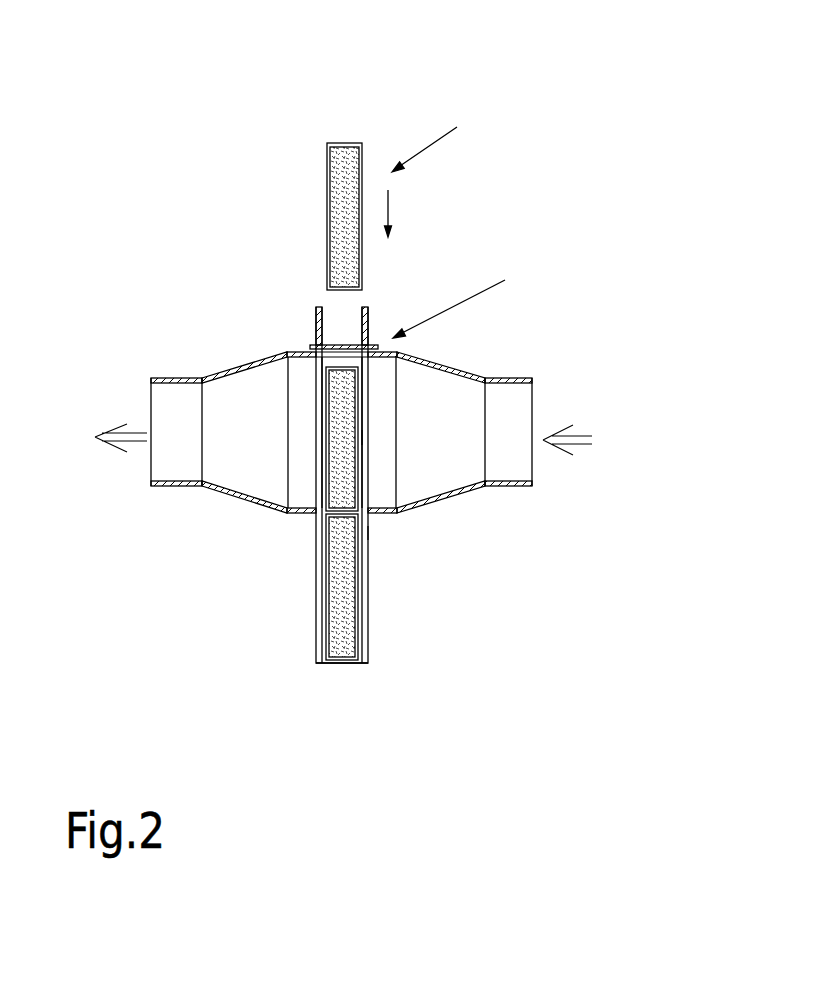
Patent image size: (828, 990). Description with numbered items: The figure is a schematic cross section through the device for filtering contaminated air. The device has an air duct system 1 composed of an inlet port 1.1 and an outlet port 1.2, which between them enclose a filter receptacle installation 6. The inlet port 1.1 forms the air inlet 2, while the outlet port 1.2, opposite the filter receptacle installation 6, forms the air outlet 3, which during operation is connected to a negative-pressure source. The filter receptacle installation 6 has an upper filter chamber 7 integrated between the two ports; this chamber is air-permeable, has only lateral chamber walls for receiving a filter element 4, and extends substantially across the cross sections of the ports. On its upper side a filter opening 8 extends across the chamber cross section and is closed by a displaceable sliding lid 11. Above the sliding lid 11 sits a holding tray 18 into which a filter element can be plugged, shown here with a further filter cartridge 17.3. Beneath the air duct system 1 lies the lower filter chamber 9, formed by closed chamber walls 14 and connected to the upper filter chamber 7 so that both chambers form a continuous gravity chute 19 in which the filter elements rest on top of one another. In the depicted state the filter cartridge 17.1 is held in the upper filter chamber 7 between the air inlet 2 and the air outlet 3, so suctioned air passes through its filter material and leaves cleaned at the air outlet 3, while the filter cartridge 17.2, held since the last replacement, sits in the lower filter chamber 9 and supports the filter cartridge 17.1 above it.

The air duct system 1 is at (318, 491).
The inlet port 1.1 is at (417, 463).
The outlet port 1.2 is at (267, 492).
The air inlet 2 is at (533, 400).
The air outlet 3 is at (150, 401).
The filter element 4 is at (436, 166).
The filter receptacle installation 6 is at (470, 297).
The upper filter chamber 7 is at (323, 403).
The filter opening 8 is at (339, 355).
The lower filter chamber 9 is at (369, 580).
The sliding lid 11 is at (340, 353).
The closed chamber walls 14 is at (372, 622).
The filter cartridge 17.1 is at (333, 423).
The filter cartridge 17.2 is at (353, 563).
The third filter element 17.3 is at (347, 143).
The holding tray 18 is at (353, 320).
The gravity chute 19 is at (368, 533).